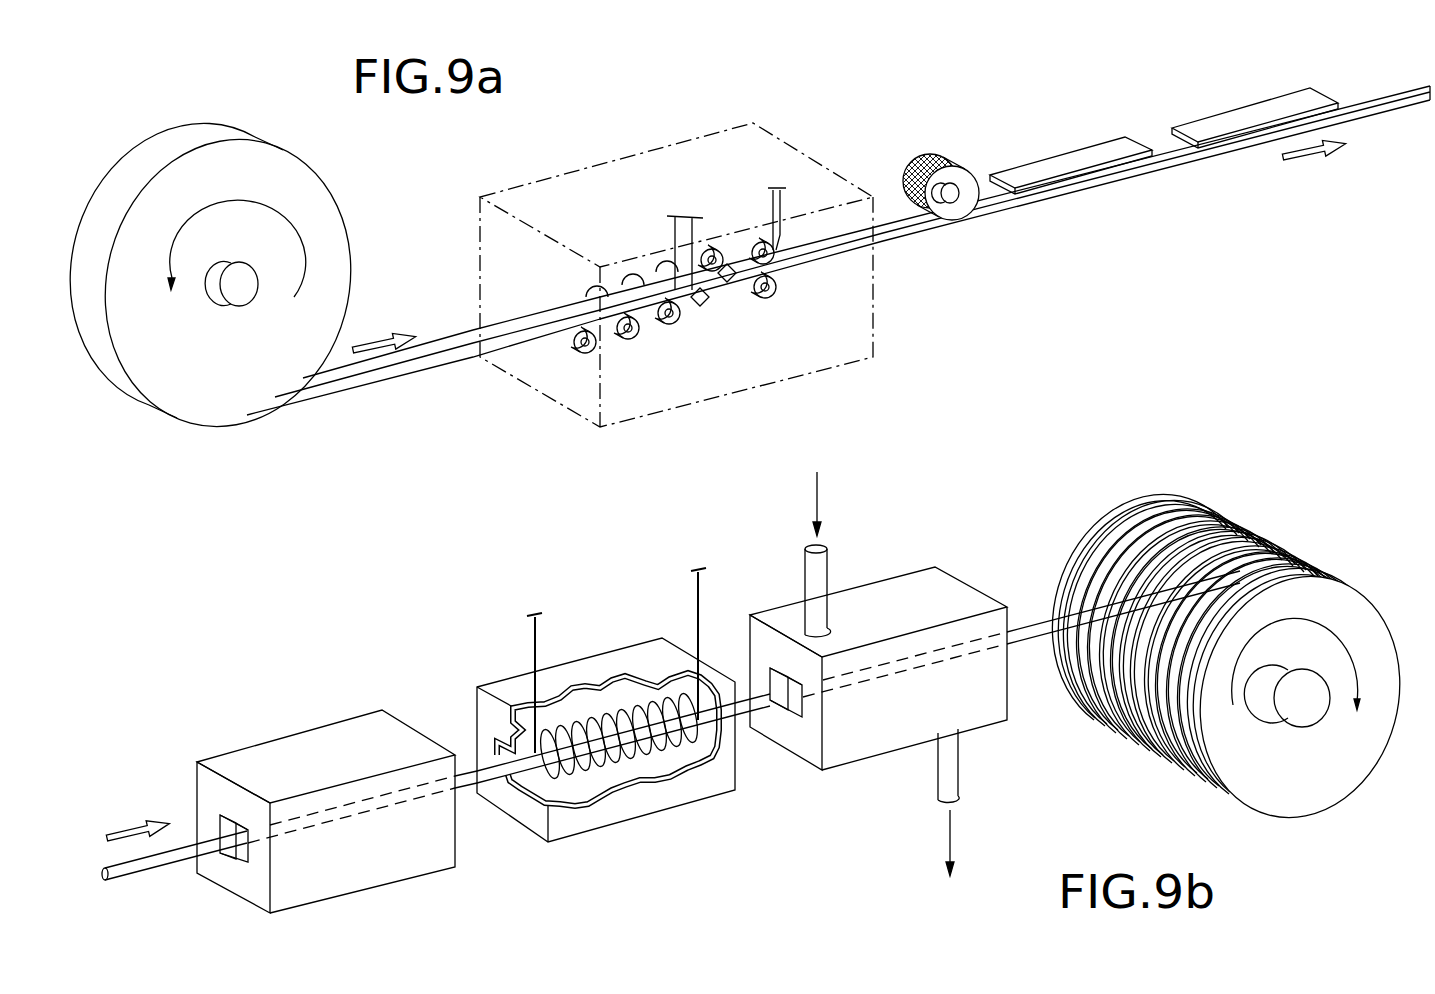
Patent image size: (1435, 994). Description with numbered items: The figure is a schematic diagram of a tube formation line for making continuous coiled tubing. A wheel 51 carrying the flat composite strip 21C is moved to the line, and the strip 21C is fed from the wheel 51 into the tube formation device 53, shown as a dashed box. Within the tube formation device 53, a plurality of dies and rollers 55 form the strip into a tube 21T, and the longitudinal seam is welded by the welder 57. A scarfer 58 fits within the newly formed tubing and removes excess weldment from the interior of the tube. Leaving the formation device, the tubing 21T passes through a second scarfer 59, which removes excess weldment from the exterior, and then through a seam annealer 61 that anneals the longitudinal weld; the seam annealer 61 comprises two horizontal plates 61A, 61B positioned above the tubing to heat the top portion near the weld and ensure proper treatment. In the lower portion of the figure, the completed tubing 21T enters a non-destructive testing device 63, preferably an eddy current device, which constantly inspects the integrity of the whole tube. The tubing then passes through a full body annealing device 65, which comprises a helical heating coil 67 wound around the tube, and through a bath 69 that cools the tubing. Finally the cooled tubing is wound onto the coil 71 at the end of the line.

In FIG. 9A, the wheel 51 is at (250, 370).
In FIG. 9A, the composite strip 21C is at (392, 382).
In FIG. 9A, the tube 21T is at (988, 208).
In FIG. 9A, the tube formation device 53 is at (877, 303).
In FIG. 9A, the dies and rollers 55 is at (637, 337).
In FIG. 9A, the welder 57 is at (773, 240).
In FIG. 9A, the scarfer 58 is at (673, 233).
In FIG. 9A, the scarfer 59 is at (918, 148).
In FIG. 9A, the seam annealer 61 is at (1087, 133).
In FIG. 9A, the horizontal plate 61A is at (1015, 175).
In FIG. 9A, the horizontal plate 61B is at (1198, 128).
In FIG. 9B, the non-destructive testing device 63 is at (262, 758).
In FIG. 9B, the full body annealing device 65 is at (578, 668).
In FIG. 9B, the helical heating coil 67 is at (642, 713).
In FIG. 9B, the bath 69 is at (893, 595).
In FIG. 9B, the coil 71 is at (1130, 545).